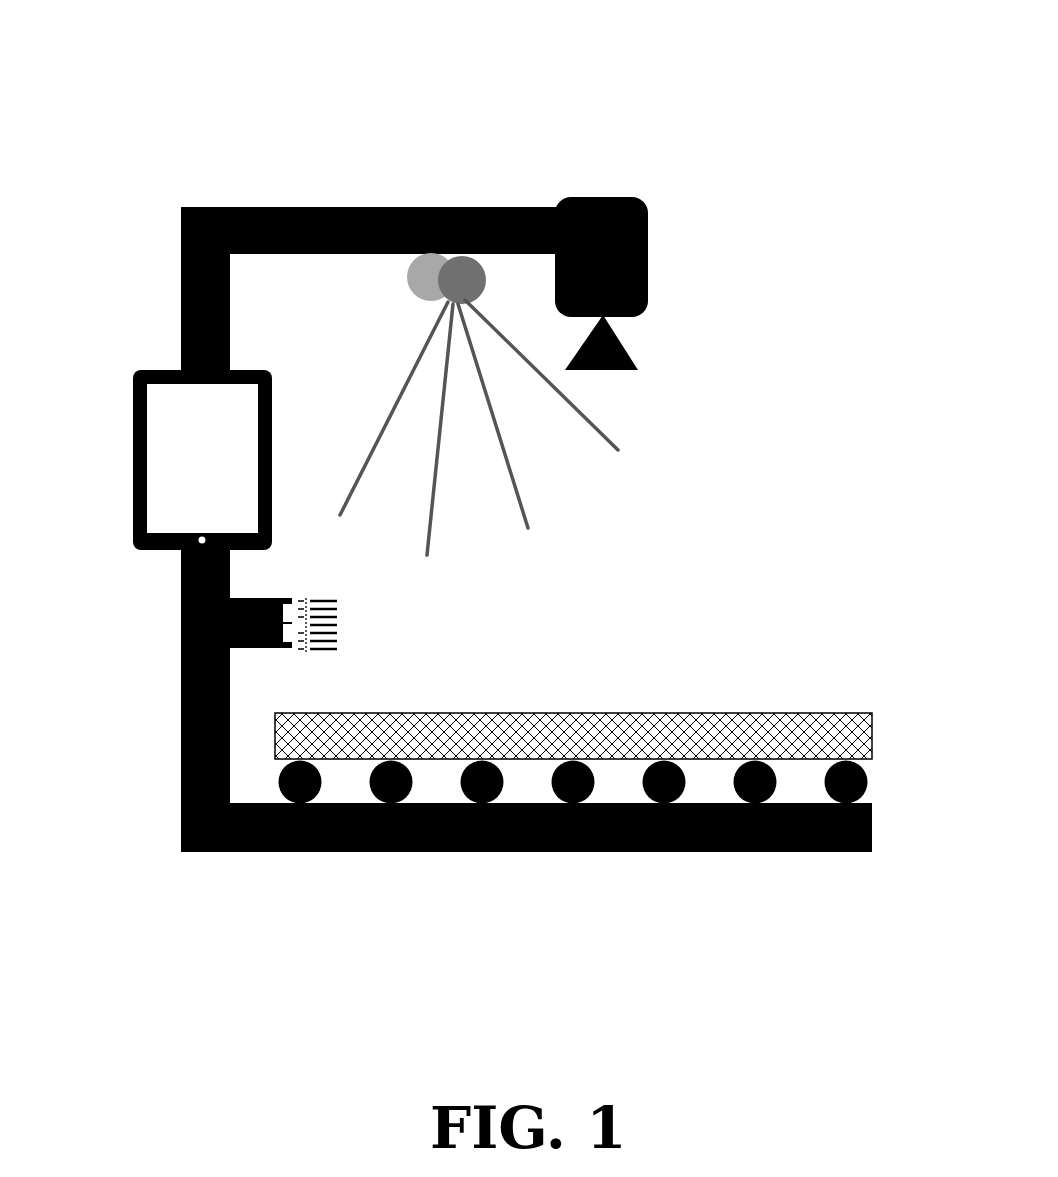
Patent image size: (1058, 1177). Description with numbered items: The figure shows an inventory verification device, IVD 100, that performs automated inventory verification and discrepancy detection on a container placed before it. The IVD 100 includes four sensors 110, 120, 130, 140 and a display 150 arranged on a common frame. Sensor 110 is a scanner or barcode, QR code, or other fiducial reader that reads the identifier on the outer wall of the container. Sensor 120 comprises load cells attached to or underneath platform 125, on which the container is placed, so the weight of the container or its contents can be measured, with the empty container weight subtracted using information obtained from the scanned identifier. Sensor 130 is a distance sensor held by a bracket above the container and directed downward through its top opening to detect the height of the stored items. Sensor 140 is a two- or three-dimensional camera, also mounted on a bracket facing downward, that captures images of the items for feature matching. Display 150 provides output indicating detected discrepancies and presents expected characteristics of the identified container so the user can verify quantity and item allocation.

The inventory verification device 100 is at (500, 33).
The sensor 110 is at (280, 589).
The sensor 120 is at (872, 777).
The platform 125 is at (877, 713).
The sensor 130 is at (412, 292).
The sensor 140 is at (654, 286).
The display 150 is at (124, 477).